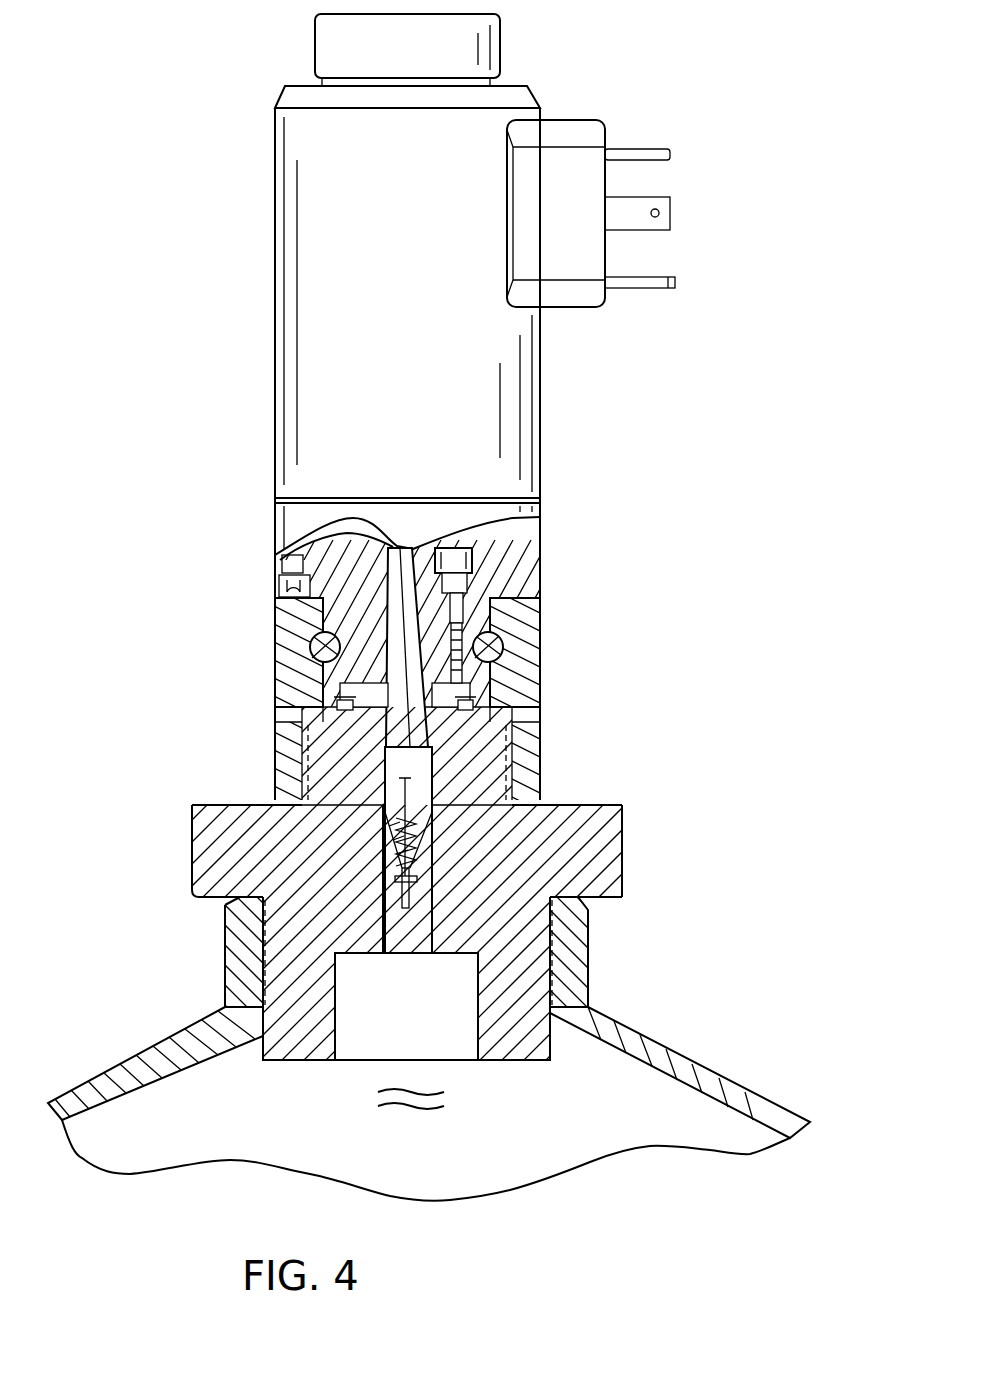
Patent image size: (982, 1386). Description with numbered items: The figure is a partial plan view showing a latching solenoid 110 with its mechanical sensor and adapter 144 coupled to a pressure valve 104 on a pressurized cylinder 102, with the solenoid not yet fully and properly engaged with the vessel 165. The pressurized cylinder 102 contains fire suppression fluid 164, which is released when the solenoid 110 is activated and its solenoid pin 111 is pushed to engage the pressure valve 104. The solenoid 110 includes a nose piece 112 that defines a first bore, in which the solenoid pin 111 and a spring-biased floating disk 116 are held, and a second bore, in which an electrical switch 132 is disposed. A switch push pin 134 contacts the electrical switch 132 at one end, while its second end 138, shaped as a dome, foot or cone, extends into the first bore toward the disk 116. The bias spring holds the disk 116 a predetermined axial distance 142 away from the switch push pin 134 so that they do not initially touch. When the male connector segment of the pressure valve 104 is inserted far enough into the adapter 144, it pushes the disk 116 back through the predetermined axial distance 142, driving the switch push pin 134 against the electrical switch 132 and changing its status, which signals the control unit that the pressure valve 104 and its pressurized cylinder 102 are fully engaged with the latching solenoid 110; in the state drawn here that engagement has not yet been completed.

The pressurized cylinder 102 is at (745, 1082).
The pressure valve 104 is at (600, 815).
The latching solenoid 110 is at (487, 438).
The solenoid pin 111 is at (277, 518).
The nose piece 112 is at (527, 561).
The disk 116 is at (447, 713).
The electrical switch 132 is at (500, 532).
The switch push pin 134 is at (470, 645).
The second end 138 is at (470, 590).
The predetermined axial distance 142 is at (275, 672).
The adapter 144 is at (530, 617).
The fire suppression fluid 164 is at (452, 1120).
The vessel 165 is at (648, 1006).